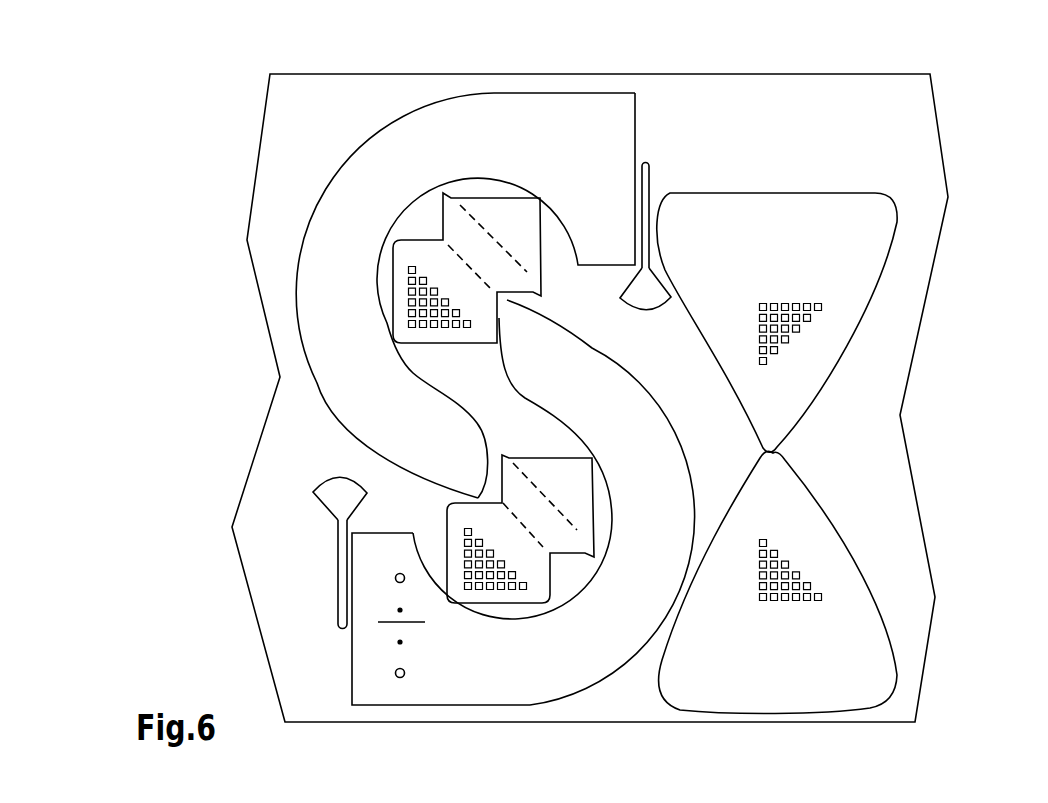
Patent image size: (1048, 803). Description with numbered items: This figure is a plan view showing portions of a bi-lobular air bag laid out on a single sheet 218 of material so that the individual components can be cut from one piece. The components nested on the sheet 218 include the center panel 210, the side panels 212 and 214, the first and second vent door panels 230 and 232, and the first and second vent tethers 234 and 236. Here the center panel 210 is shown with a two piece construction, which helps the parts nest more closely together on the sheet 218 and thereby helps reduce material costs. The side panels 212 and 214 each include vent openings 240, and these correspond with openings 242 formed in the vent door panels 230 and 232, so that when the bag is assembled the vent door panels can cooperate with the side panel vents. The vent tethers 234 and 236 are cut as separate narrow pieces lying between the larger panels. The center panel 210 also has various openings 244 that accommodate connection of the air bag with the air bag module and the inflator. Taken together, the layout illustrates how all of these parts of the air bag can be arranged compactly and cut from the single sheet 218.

The sheet 218 is at (326, 98).
The center panel 210 is at (458, 133).
The first vent door panel 230 is at (433, 258).
The second vent door panel 232 is at (538, 562).
The openings 242 is at (452, 322).
The vent openings 240 is at (777, 352).
The side panel 212 is at (842, 240).
The side panel 214 is at (862, 648).
The first vent tether 234 is at (646, 294).
The second vent tether 236 is at (340, 490).
The openings 244 is at (416, 635).